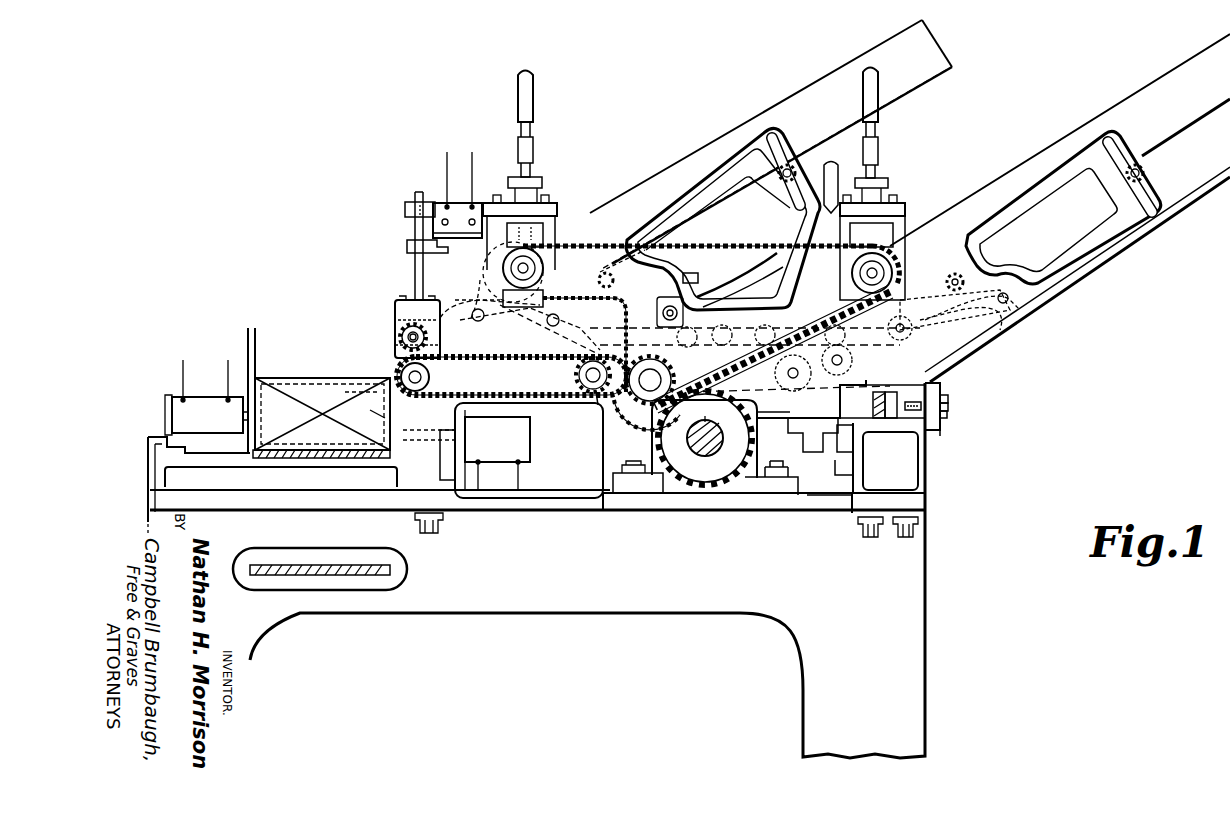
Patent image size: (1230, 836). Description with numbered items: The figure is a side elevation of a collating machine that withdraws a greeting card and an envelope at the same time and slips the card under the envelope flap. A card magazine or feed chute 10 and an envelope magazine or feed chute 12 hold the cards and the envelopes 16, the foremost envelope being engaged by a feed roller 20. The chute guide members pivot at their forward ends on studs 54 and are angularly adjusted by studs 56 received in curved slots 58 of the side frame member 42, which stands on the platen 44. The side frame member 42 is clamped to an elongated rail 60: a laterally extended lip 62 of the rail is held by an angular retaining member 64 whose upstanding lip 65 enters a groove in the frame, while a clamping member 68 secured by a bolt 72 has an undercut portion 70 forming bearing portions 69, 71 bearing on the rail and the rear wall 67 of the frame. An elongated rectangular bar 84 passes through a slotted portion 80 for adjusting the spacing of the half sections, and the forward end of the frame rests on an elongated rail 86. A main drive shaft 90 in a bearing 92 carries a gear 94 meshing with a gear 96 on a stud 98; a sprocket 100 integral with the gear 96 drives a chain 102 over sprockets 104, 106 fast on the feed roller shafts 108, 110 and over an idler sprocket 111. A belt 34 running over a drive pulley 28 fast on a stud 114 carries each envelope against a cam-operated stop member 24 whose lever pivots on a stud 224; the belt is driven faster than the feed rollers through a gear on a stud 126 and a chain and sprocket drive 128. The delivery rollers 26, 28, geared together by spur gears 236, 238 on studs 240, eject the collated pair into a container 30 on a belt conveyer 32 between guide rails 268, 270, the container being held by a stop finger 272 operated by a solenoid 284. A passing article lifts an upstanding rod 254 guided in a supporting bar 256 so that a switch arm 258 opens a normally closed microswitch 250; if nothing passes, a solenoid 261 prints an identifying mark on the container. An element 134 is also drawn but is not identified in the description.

The magazine or feed chute 10 is at (750, 114).
The magazine or feed chute 12 is at (1150, 84).
The envelopes 16 is at (500, 255).
The feed roller 20 is at (950, 277).
The stop member 24 is at (480, 330).
The delivery roller 26 is at (398, 334).
The delivery roller 28 is at (398, 348).
The container 30 is at (288, 378).
The belt conveyer 32 is at (338, 456).
The belt 34 is at (752, 330).
The side frame member 42 is at (1053, 292).
The platen 44 is at (567, 512).
The studs 54 is at (697, 270).
The studs 56 is at (836, 163).
The curved slots 58 is at (786, 142).
The elongated rail 60 is at (926, 472).
The laterally extended lip 62 is at (840, 460).
The angular retaining member 64 is at (825, 448).
The upstanding lip 65 is at (818, 440).
The rear wall 67 is at (918, 395).
The clamping member 68 is at (942, 430).
The bearing portion 69 is at (932, 385).
The undercut portion 70 is at (950, 410).
The bearing portion 71 is at (947, 420).
The bolt 72 is at (950, 397).
The slotted portion 80 is at (882, 392).
The elongated rectangular bar 84 is at (890, 430).
The elongated rail 86 is at (398, 473).
The main drive shaft 90 is at (700, 460).
The bearing 92 is at (755, 440).
The gear 94 is at (740, 500).
The gear 96 is at (655, 408).
The stud 98 is at (640, 402).
The sprocket 100 is at (735, 348).
The chain 102 is at (745, 246).
The sprocket 104 is at (543, 218).
The sprocket 106 is at (852, 274).
The feed roller shaft 108 is at (505, 272).
The feed roller shaft 110 is at (832, 292).
The idler sprocket 111 is at (590, 328).
The stud 114 is at (430, 378).
The stud 126 is at (600, 395).
The chain and sprocket drive 128 is at (570, 376).
The cam 134 is at (700, 278).
The stud 224 is at (532, 310).
The spur gear 236 is at (398, 362).
The spur gear 238 is at (400, 312).
The studs 240 is at (398, 323).
The microswitch 250 is at (447, 205).
The upstanding rod 254 is at (415, 270).
The supporting bar 256 is at (405, 210).
The switch arm 258 is at (407, 245).
The solenoid 261 is at (190, 398).
The guide rail 268 is at (248, 332).
The guide rail 270 is at (352, 396).
The stop fingers 272 is at (383, 417).
The solenoid 284 is at (520, 460).